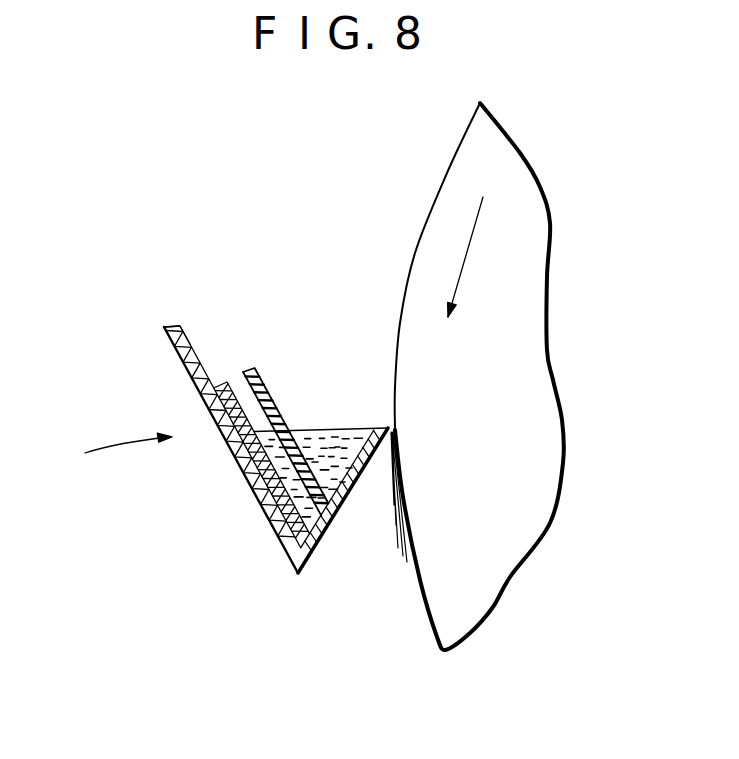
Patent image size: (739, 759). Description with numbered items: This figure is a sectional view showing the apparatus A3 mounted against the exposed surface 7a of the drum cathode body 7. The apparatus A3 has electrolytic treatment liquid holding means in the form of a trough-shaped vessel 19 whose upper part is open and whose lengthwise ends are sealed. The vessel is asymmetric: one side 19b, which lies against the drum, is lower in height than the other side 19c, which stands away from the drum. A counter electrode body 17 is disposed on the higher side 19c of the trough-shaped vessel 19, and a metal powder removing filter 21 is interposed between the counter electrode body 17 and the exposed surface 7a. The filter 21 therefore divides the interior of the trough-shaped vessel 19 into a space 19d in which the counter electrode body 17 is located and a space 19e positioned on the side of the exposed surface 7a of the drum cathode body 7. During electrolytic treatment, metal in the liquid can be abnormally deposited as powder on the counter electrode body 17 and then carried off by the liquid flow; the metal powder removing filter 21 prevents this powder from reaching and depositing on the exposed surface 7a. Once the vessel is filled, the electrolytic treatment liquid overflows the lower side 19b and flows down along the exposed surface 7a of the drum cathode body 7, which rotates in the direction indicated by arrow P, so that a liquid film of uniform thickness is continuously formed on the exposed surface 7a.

The drum cathode body 7 is at (438, 376).
The exposed surface of the drum cathode body 7a is at (415, 253).
The counter electrode body 17 is at (218, 393).
The trough-shaped vessel 19 is at (244, 457).
The one side of the trough-shaped vessel 19b is at (377, 473).
The other side of the trough-shaped vessel 19c is at (177, 338).
The space where the counter electrode body is disposed 19d is at (282, 528).
The space positioned on the side of the exposed surface 19e is at (330, 443).
The metal powder removing filter 21 is at (263, 383).
The direction of rotation of the drum cathode body P is at (467, 257).
The apparatus A3 is at (107, 450).